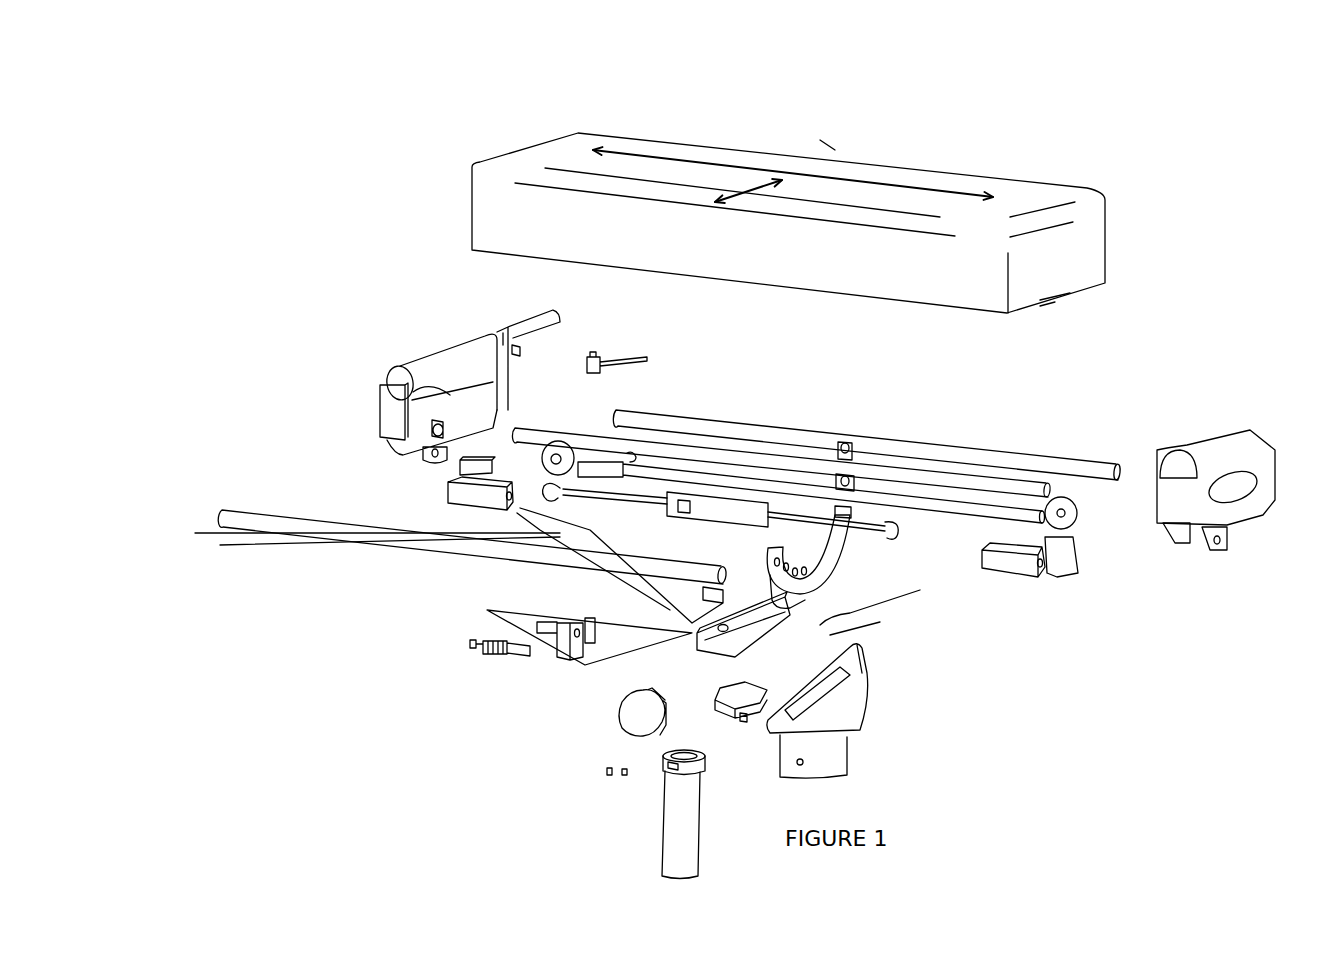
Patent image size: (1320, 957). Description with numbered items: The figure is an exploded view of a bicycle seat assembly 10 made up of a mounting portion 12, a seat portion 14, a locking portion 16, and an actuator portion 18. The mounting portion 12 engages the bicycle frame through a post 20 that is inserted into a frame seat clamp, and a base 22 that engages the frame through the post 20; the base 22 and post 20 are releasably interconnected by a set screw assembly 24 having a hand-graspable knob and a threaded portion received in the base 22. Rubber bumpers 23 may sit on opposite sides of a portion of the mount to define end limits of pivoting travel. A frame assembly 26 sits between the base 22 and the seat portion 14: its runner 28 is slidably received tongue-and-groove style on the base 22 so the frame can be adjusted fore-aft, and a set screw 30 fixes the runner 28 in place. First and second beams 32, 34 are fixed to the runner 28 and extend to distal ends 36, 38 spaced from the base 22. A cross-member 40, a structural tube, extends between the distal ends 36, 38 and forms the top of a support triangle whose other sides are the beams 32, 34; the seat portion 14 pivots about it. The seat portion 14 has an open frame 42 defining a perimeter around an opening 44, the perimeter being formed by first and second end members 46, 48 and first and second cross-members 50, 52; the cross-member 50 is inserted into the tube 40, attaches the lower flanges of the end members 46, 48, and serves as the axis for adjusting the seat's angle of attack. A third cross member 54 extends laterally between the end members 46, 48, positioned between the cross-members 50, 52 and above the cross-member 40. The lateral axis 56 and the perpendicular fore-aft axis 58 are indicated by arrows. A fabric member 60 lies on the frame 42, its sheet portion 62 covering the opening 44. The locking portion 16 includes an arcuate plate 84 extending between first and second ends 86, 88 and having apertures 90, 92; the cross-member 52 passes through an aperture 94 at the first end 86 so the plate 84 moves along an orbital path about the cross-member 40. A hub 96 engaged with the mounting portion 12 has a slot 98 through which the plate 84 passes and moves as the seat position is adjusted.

The bicycle seat assembly 10 is at (278, 179).
The mounting portion 12 is at (290, 379).
The seat portion 14 is at (1003, 157).
The locking portion 16 is at (310, 674).
The actuator portion 18 is at (1057, 356).
The post 20 is at (677, 825).
The base 22 is at (840, 720).
The bumpers 23 is at (605, 773).
The set screw assembly 24 is at (635, 713).
The frame assembly 26 is at (465, 672).
The runner 28 is at (725, 650).
The set screw 30 is at (742, 695).
The first beam 32 is at (462, 535).
The second beam 34 is at (872, 620).
The distal end of first beam 36 is at (500, 530).
The distal end of second beam 38 is at (965, 620).
The cross-member 40 is at (703, 483).
The open frame 42 is at (352, 274).
The opening 44 is at (458, 357).
The first end member 46 is at (392, 403).
The second end member 48 is at (1213, 450).
The first cross-member 50 is at (195, 533).
The second cross-member 52 is at (982, 457).
The third cross member 54 is at (567, 437).
The lateral axis 56 is at (832, 175).
The fore-aft axis 58 is at (742, 190).
The fabric member 60 is at (415, 178).
The sheet portion 62 is at (793, 175).
The plate 84 is at (902, 547).
The first end of plate 86 is at (857, 452).
The second end of plate 88 is at (765, 550).
The aperture 90 is at (808, 572).
The aperture 92 is at (783, 553).
The aperture 94 is at (847, 442).
The hub 96 is at (319, 588).
The slot 98 is at (590, 622).